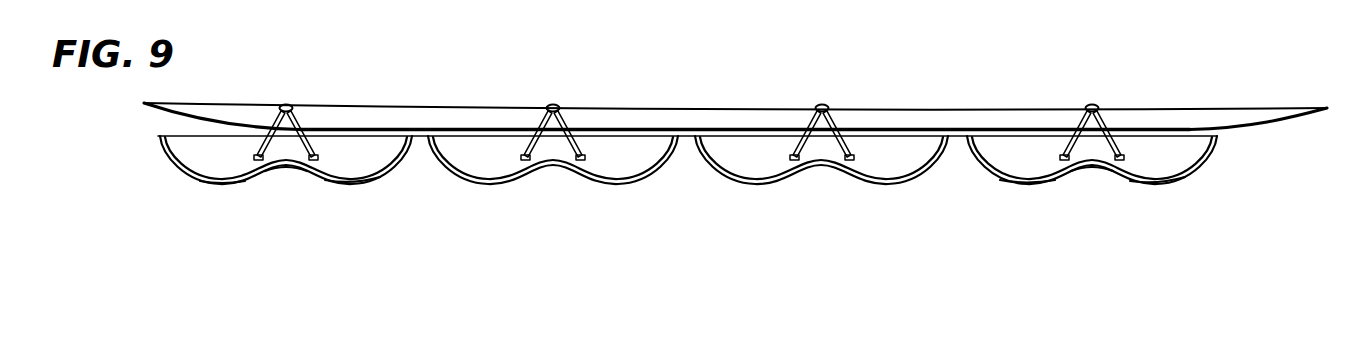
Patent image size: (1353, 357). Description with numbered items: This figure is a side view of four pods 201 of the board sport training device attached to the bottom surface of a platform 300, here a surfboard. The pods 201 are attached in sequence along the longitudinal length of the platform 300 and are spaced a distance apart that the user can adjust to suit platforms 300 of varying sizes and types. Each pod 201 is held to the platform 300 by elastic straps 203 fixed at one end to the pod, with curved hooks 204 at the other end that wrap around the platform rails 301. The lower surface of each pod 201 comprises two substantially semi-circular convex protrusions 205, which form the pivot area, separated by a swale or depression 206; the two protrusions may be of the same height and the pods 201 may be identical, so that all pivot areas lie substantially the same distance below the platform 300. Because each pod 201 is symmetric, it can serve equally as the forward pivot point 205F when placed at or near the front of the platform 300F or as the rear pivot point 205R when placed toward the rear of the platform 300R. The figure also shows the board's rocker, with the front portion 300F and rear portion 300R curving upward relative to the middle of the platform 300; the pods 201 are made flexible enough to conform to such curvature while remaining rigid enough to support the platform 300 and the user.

The pod 201 is at (192, 158).
The straps 203 is at (307, 108).
The curved hooks 204 is at (288, 94).
The convex protrusions 205 is at (345, 193).
The forward pivot point 205F is at (222, 193).
The rear pivot point 205R is at (1150, 195).
The swale or depression 206 is at (287, 180).
The platform 300 is at (703, 123).
The front portion of the platform 300F is at (146, 112).
The rear portion of the platform 300R is at (1330, 117).
The platform rails 301 is at (452, 108).